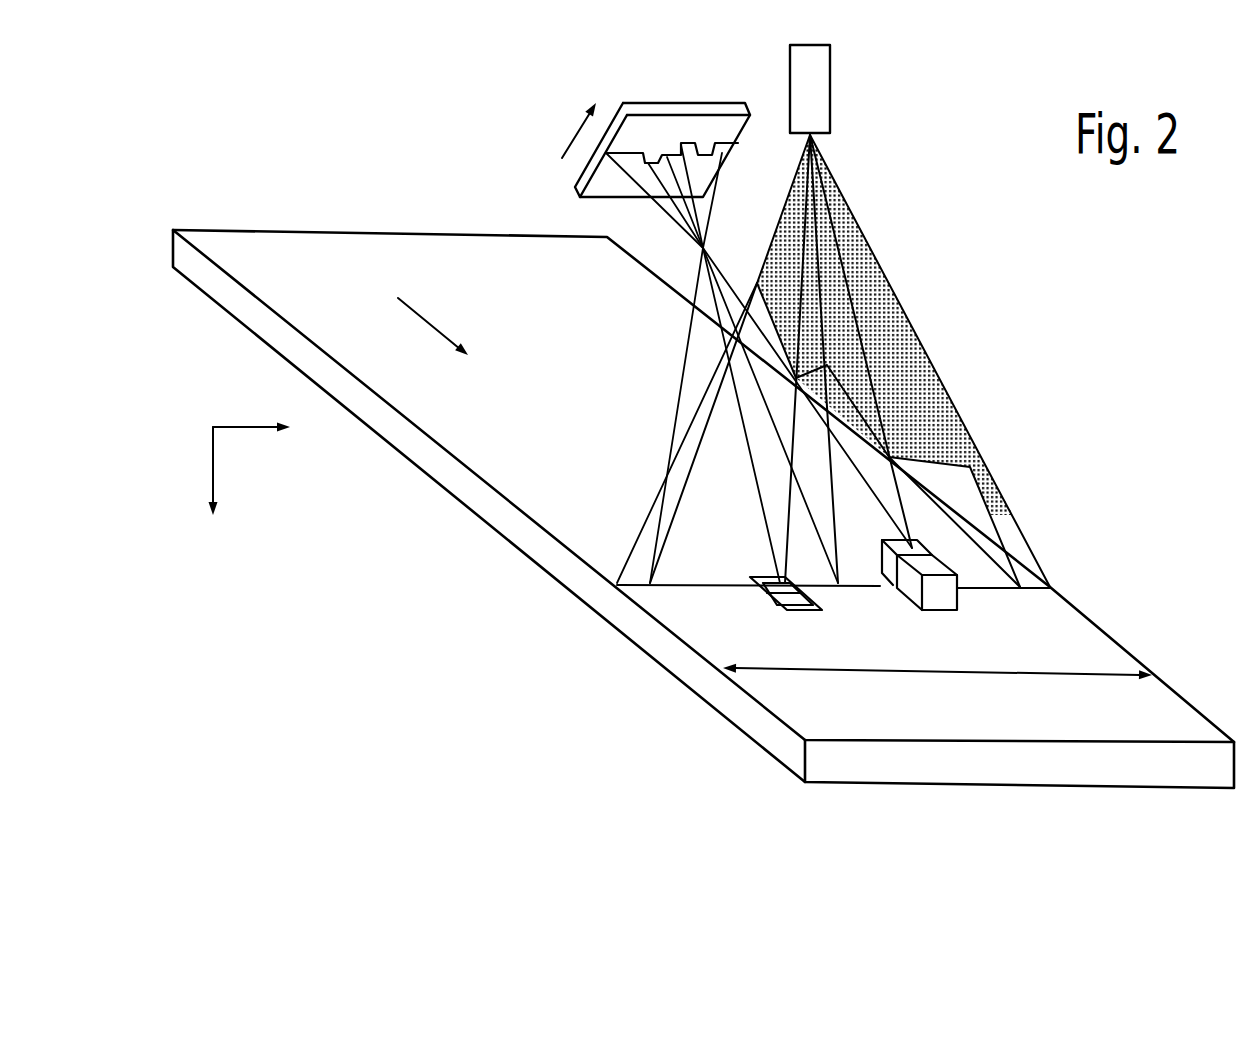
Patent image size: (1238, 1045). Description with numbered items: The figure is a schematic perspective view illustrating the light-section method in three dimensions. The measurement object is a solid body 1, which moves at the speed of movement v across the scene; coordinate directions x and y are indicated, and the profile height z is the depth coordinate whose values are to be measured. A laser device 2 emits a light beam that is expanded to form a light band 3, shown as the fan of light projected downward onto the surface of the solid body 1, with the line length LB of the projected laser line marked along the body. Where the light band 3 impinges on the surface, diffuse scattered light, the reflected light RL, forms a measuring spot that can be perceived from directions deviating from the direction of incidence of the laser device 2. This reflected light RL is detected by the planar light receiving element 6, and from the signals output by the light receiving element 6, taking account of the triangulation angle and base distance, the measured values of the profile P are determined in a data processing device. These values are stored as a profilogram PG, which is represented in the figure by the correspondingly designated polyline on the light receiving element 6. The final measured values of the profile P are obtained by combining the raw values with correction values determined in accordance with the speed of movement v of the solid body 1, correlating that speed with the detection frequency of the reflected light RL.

The solid body 1 is at (366, 247).
The laser device 2 is at (822, 92).
The light band 3 is at (885, 300).
The light receiving element 6 is at (664, 103).
The profilogram PG is at (714, 146).
The reflected light RL is at (683, 355).
The profile P is at (713, 585).
The line length LB is at (948, 676).
The speed of movement v is at (428, 318).
The x direction x is at (570, 130).
The y direction y is at (263, 426).
The profile height z is at (214, 487).